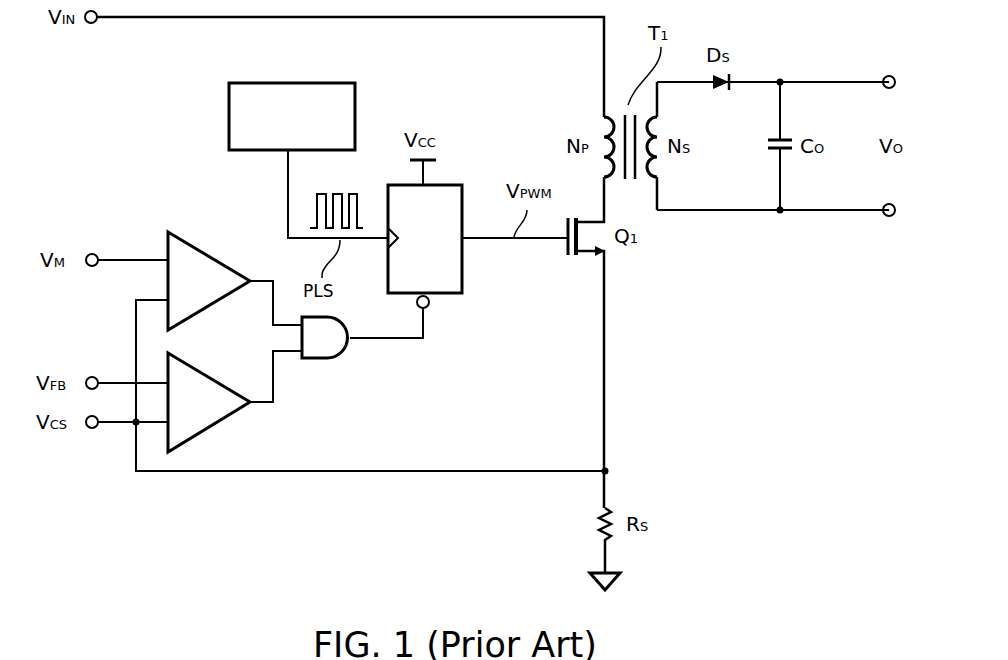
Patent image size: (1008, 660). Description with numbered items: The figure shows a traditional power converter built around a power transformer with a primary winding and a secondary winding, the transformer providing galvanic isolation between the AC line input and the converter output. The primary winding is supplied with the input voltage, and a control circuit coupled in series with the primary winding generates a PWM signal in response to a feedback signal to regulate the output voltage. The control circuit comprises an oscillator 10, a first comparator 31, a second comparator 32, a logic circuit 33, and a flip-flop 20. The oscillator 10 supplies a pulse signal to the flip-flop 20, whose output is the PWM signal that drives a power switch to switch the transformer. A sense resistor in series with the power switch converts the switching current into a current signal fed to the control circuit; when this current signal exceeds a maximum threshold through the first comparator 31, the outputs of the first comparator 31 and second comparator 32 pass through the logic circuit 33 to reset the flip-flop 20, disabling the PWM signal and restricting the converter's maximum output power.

The oscillator 10 is at (292, 88).
The flip-flop 20 is at (462, 246).
The first comparator 31 is at (209, 264).
The second comparator 32 is at (211, 386).
The logic circuit 33 is at (320, 369).